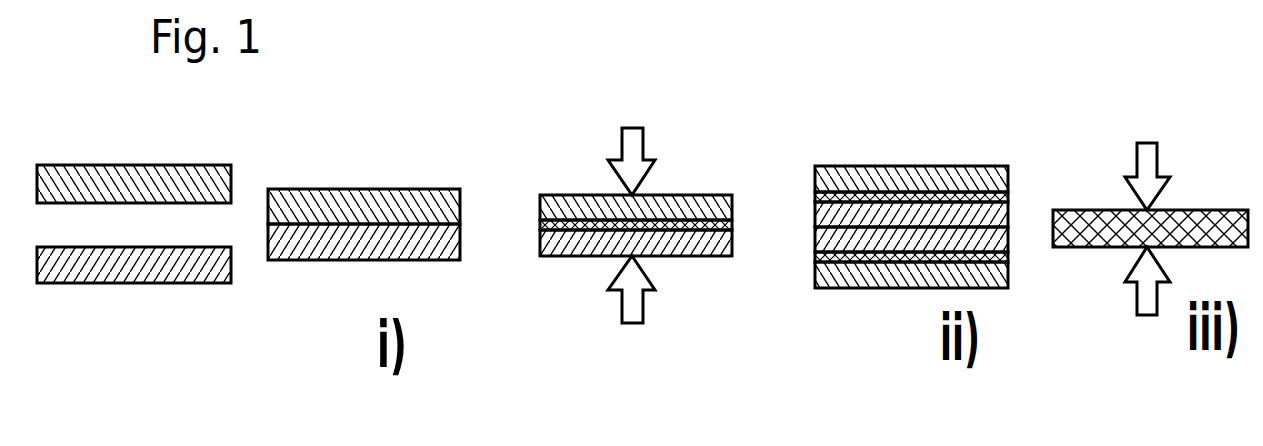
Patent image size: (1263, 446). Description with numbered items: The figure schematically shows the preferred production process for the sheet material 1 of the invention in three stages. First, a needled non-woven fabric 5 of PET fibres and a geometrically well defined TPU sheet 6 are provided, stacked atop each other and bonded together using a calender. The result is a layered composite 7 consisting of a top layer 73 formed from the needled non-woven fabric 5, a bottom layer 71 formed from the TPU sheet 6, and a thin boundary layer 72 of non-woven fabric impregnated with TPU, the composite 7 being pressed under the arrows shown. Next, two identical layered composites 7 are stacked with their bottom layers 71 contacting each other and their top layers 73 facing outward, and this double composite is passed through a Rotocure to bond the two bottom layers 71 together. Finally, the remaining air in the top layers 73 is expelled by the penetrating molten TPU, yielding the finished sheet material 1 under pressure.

The sheet material 1 is at (1115, 220).
The needled non-woven fabric 5 is at (378, 197).
The TPU sheet 6 is at (328, 245).
The layered composite 7 is at (598, 152).
The bottom layer 71 is at (540, 257).
The boundary layer 72 is at (542, 222).
The top layer 73 is at (548, 202).